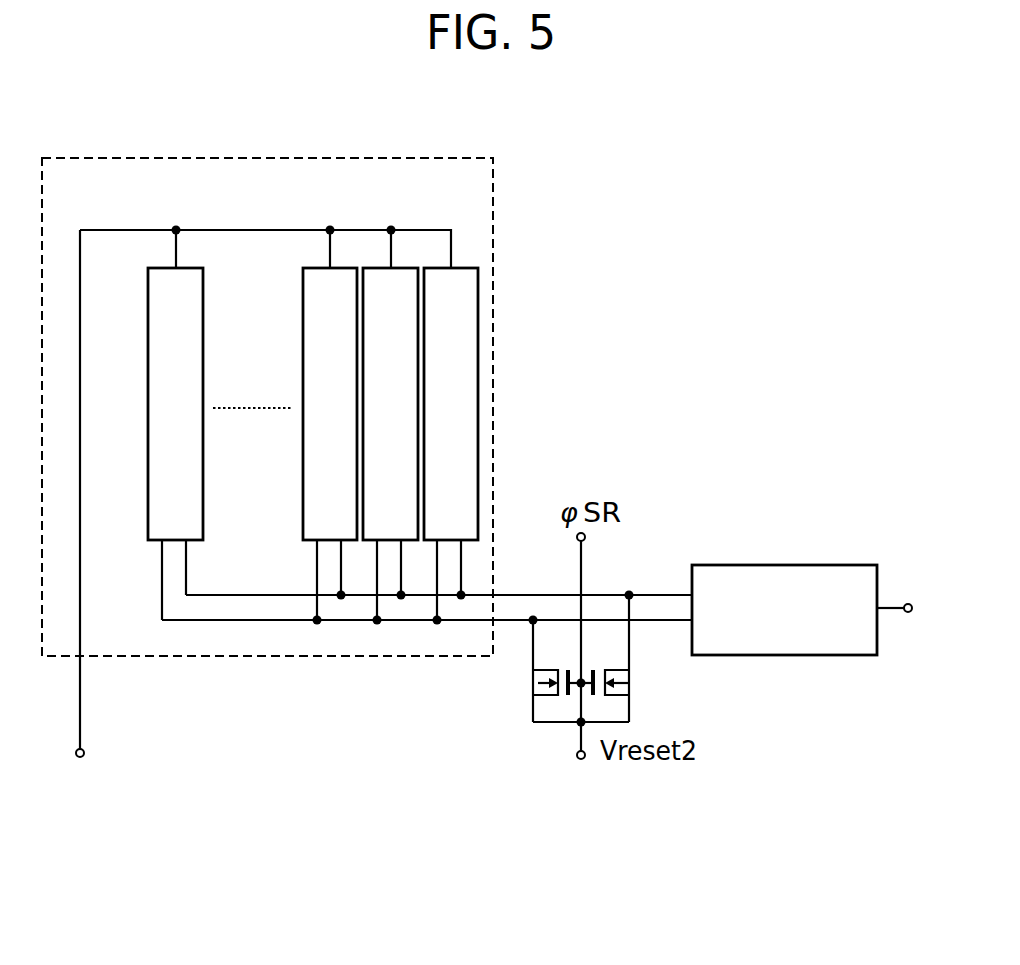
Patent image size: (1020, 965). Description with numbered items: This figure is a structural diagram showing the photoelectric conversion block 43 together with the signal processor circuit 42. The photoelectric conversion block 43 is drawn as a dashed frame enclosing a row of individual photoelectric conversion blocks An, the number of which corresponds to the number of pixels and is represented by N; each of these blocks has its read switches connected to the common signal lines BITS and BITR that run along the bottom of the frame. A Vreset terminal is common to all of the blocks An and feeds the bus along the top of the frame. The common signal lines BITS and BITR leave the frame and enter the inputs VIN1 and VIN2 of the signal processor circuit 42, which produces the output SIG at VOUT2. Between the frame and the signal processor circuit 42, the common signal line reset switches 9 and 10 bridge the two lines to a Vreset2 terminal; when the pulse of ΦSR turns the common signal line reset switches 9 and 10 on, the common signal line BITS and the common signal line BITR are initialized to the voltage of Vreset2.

The photoelectric conversion block 43 is at (494, 234).
The signal processor circuit 42 is at (781, 564).
The common signal line reset switch 9 is at (527, 683).
The common signal line reset switch 10 is at (640, 683).